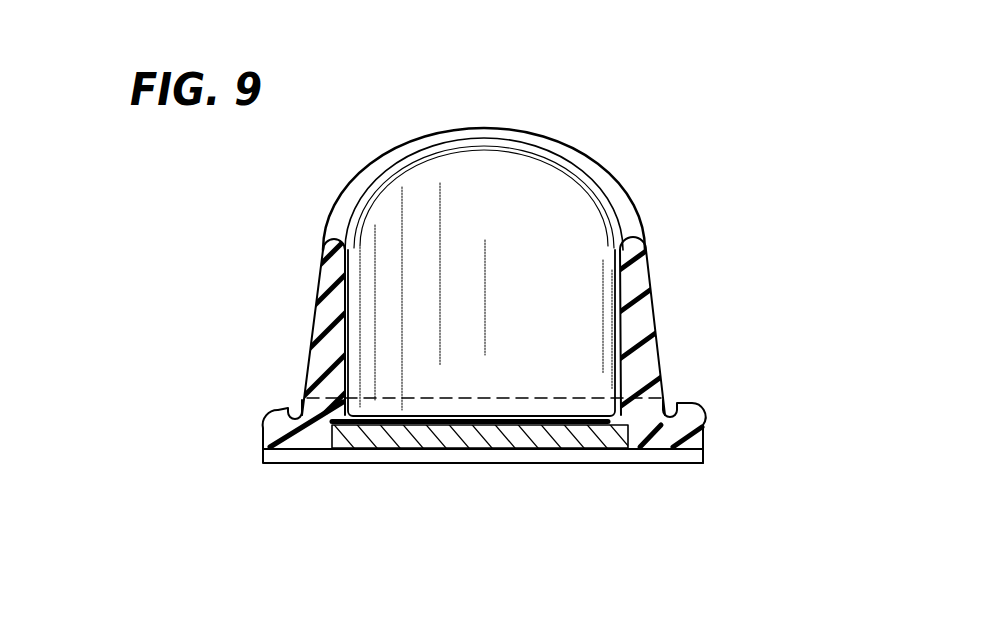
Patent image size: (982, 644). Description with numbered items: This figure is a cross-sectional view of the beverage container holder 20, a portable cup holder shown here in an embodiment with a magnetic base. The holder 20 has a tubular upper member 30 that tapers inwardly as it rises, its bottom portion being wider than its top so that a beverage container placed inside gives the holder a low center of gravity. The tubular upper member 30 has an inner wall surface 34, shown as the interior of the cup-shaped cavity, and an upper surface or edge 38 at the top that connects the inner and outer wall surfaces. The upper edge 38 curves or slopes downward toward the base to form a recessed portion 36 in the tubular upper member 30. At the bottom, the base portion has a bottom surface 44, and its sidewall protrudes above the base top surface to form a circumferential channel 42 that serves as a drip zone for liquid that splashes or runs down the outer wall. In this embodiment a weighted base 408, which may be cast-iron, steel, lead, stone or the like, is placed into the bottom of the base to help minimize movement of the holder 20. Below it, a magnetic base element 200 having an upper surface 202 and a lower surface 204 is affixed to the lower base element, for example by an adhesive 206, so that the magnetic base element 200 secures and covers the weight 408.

The beverage container holder 20 is at (182, 318).
The tubular upper member 30 is at (656, 316).
The inner wall surface 34 is at (344, 320).
The recessed portion 36 is at (638, 243).
The upper surface or edge 38 is at (483, 127).
The circumferential channel 42 is at (668, 410).
The bottom surface 44 is at (393, 448).
The magnetic base element 200 is at (264, 455).
The upper surface 202 is at (268, 440).
The lower surface 204 is at (537, 463).
The adhesive 206 is at (705, 447).
The weighted base 408 is at (457, 442).